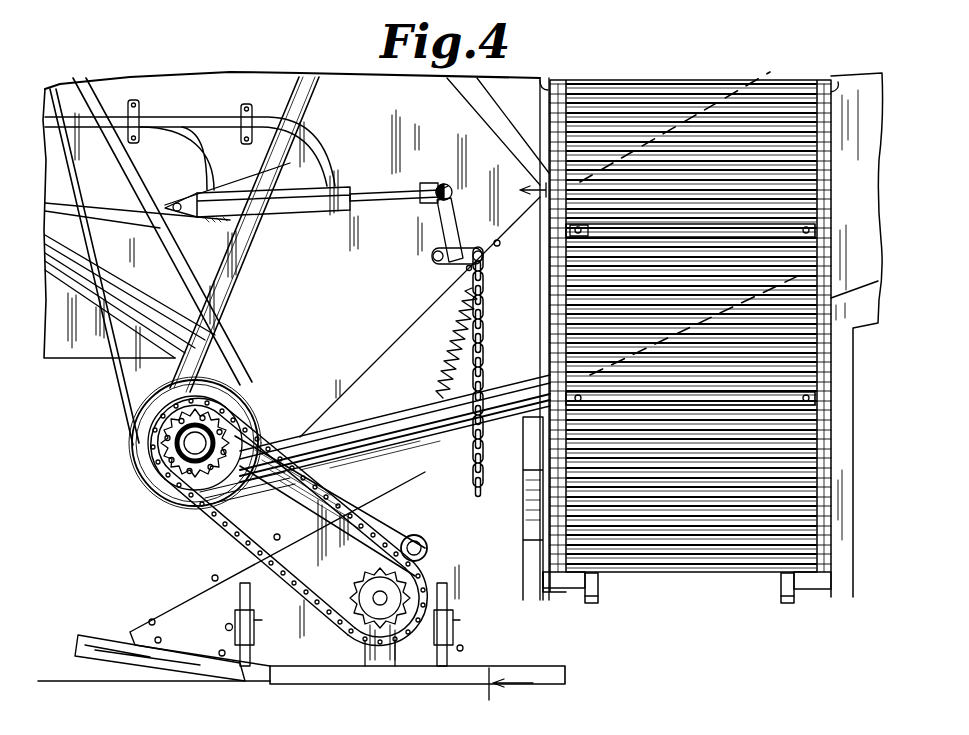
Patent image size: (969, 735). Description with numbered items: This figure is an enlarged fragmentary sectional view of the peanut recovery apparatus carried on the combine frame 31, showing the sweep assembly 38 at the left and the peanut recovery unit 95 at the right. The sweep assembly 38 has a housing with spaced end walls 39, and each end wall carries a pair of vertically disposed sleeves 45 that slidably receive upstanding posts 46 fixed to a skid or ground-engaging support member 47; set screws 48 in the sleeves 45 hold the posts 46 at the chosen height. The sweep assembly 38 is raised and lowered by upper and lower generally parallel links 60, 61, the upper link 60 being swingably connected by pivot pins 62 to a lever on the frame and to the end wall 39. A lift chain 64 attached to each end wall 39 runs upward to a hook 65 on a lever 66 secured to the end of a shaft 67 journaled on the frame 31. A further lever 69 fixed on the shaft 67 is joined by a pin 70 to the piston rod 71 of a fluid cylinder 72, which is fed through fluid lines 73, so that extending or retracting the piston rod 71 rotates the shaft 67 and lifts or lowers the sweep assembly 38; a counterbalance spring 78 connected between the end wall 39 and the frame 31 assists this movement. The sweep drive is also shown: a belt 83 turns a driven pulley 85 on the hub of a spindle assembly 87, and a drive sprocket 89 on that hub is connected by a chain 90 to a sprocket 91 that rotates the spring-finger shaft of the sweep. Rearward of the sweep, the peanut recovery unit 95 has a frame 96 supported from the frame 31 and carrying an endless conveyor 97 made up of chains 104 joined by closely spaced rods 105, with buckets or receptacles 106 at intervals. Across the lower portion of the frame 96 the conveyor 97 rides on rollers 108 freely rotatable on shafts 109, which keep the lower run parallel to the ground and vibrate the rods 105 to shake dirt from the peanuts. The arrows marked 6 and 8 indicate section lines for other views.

The section line 6 is at (517, 454).
The frame member 8 is at (262, 368).
The frame 31 is at (292, 85).
The sweep assembly 38 is at (158, 597).
The end walls 39 is at (323, 672).
The sleeves 45 is at (288, 612).
The upstanding posts 46 is at (240, 590).
The skid or ground-engaging support member 47 is at (262, 672).
The set screws 48 is at (226, 626).
The upper link 60 is at (372, 500).
The lower link 61 is at (236, 530).
The pivot pins 62 is at (420, 540).
The lift chain 64 is at (488, 357).
The hook 65 is at (486, 262).
The lever 66 is at (484, 226).
The shaft 67 is at (430, 254).
The lever 69 is at (428, 214).
The pin 70 is at (449, 184).
The piston rod 71 is at (372, 186).
The fluid cylinder 72 is at (300, 215).
The fluid lines 73 is at (205, 96).
The counterbalance spring 78 is at (440, 364).
The belt 83 is at (110, 372).
The driven pulley 85 is at (145, 421).
The spindle assembly 87 is at (172, 452).
The drive sprocket 89 is at (158, 445).
The chain 90 is at (300, 458).
The sprocket 91 is at (338, 615).
The peanut recovery unit 95 is at (729, 591).
The frame 96 is at (520, 524).
The endless conveyor 97 is at (681, 588).
The chains 104 is at (556, 68).
The rods 105 is at (710, 113).
The buckets or receptacles 106 is at (538, 392).
The rollers 108 is at (590, 604).
The shafts 109 is at (565, 590).